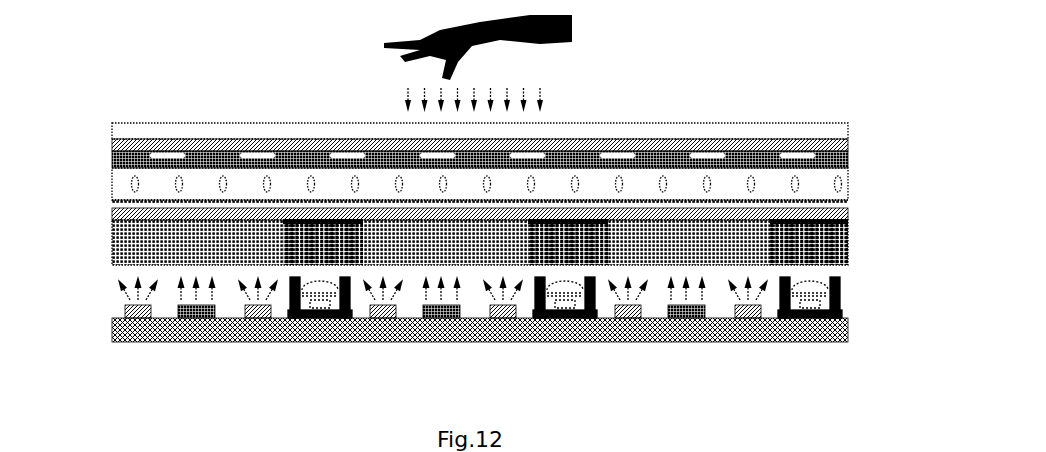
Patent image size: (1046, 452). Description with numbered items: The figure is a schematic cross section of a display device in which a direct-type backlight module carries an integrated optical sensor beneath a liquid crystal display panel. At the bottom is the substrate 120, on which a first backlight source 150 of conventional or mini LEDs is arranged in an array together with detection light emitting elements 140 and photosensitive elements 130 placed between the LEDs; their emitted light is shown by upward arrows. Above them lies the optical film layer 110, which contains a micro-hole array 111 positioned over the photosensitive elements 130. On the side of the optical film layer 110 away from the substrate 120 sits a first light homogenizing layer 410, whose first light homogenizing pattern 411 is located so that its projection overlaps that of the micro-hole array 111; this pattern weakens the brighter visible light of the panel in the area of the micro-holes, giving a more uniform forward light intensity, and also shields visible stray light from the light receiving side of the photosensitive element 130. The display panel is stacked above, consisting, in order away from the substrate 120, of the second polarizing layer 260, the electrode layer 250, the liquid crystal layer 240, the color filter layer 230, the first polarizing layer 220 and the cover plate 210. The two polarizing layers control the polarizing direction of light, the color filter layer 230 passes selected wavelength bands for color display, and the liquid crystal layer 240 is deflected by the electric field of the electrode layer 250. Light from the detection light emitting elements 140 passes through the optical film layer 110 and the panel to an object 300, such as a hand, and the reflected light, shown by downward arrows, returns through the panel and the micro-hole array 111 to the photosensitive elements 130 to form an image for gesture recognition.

The optical film layer 110 is at (112, 244).
The micro-hole array 111 is at (600, 244).
The substrate 120 is at (112, 330).
The photosensitive element 130 is at (262, 318).
The detection light emitting element 140 is at (195, 318).
The first backlight source 150 is at (778, 315).
The cover plate 210 is at (848, 133).
The first polarizing layer 220 is at (112, 145).
The color filter layer 230 is at (848, 160).
The liquid crystal layer 240 is at (112, 188).
The electrode layer 250 is at (848, 202).
The second polarizing layer 260 is at (112, 214).
The object 300 is at (583, 33).
The first light homogenizing layer 410 is at (712, 212).
The first light homogenizing pattern 411 is at (548, 212).